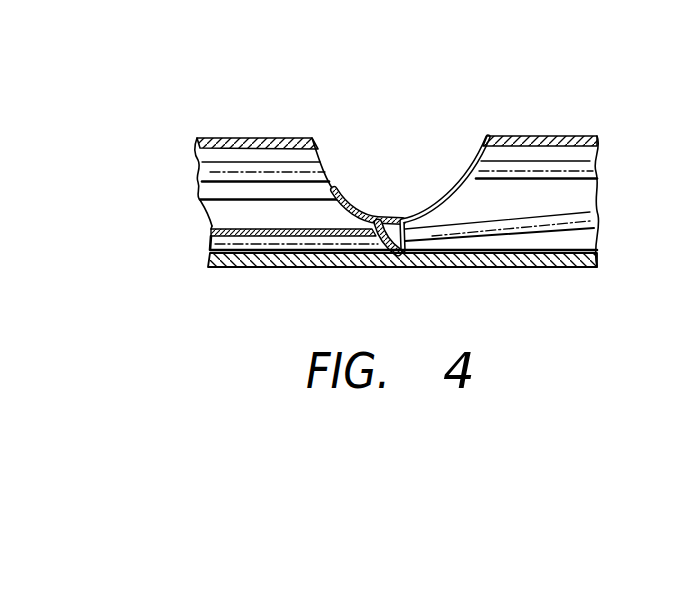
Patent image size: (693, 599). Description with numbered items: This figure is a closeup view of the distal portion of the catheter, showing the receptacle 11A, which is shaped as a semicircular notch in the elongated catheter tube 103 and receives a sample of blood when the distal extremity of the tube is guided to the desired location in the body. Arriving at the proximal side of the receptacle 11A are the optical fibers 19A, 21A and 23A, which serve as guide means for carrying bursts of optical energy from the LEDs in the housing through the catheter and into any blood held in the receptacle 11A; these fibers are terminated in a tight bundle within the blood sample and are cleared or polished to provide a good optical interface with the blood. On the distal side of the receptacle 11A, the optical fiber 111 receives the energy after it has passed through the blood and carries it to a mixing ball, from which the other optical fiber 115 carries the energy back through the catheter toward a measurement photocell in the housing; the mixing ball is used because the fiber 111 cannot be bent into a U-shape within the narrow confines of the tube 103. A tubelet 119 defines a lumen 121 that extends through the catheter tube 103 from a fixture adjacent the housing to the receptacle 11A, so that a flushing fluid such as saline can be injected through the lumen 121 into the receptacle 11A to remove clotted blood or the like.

The receptacle 11A is at (436, 113).
The optical fiber 19A is at (268, 163).
The optical fiber 21A is at (336, 190).
The optical fiber 23A is at (349, 192).
The optical fiber 111 is at (588, 153).
The optical fiber 115 is at (583, 210).
The tubelet 119 is at (217, 223).
The lumen 121 is at (213, 243).
The catheter tube 103 is at (560, 268).